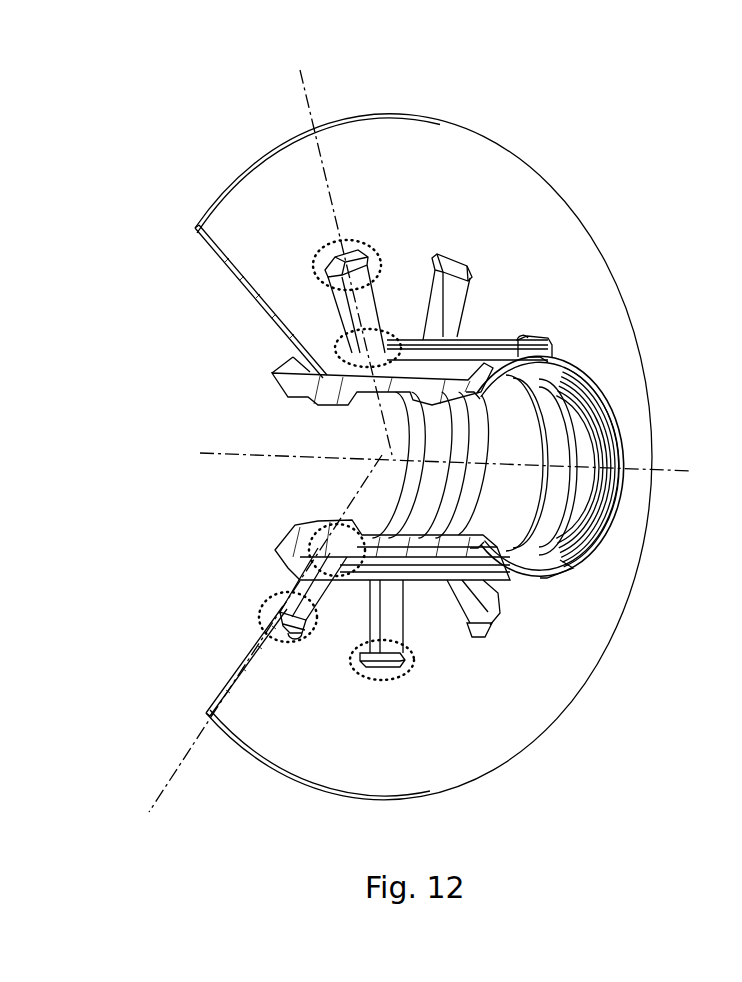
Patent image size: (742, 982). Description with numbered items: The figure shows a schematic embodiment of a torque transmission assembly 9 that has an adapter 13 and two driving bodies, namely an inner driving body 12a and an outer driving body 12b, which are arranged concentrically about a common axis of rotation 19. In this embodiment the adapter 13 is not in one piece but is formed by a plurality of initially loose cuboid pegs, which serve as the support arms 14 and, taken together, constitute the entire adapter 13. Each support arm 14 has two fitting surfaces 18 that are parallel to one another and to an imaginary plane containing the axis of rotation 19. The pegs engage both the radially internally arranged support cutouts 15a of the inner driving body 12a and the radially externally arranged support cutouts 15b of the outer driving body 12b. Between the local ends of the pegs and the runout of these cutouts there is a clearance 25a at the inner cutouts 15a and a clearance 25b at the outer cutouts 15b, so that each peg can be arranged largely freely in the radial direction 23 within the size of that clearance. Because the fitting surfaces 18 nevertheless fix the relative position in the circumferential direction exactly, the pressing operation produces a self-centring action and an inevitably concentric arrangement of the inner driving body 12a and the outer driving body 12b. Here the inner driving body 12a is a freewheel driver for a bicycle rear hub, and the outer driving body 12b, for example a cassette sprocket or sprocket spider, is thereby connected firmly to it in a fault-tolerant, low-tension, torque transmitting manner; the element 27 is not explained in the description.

The torque transmission assembly 9 is at (170, 164).
The inner driving body 12a is at (290, 385).
The outer driving body 12b is at (540, 220).
The adapter 13 is at (365, 302).
The support arms 14 is at (452, 292).
The radially internally arranged support cutouts 15a is at (478, 345).
The radially externally arranged support cutouts 15b is at (496, 644).
The fitting surfaces 18 is at (356, 612).
The axis of rotation 19 is at (217, 452).
The radial direction 23 is at (303, 76).
The clearance 25a is at (342, 348).
The clearance 25b is at (328, 250).
The latching spring arm 27 is at (393, 595).